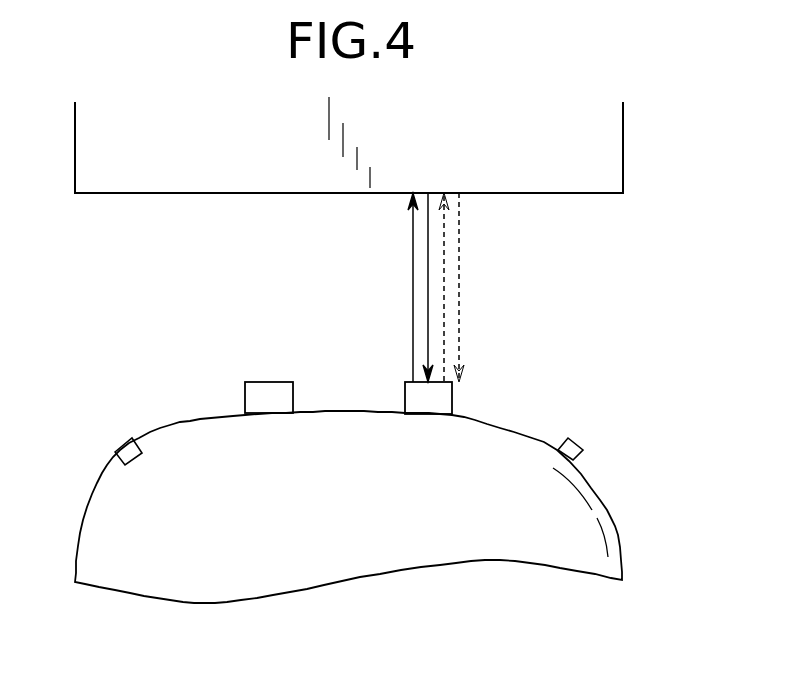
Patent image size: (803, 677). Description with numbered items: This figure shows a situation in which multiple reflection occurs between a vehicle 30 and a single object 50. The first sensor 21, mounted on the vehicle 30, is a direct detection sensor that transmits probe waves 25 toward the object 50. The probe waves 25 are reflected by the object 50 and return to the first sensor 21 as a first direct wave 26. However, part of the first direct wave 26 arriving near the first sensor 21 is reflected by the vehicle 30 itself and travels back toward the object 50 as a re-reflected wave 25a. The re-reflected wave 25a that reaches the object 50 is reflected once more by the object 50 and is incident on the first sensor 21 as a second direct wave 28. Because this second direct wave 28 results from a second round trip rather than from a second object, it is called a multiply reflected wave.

The object 50 is at (624, 173).
The probe waves 25 is at (410, 257).
The first direct wave 26 is at (426, 288).
The re-reflected wave 25a is at (444, 288).
The second direct wave 28 is at (460, 255).
The first sensor 21 is at (453, 401).
The vehicle 30 is at (624, 538).